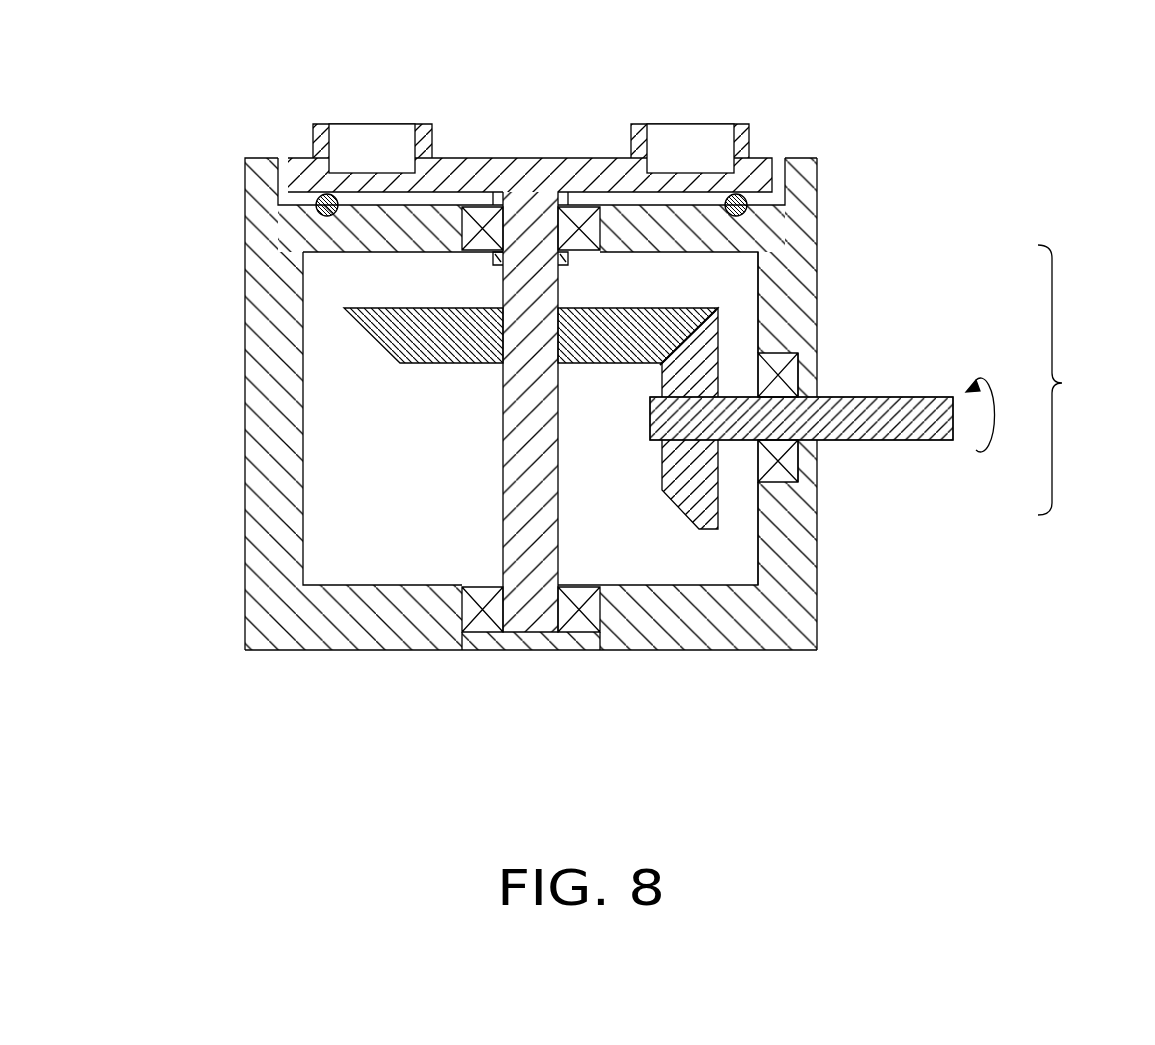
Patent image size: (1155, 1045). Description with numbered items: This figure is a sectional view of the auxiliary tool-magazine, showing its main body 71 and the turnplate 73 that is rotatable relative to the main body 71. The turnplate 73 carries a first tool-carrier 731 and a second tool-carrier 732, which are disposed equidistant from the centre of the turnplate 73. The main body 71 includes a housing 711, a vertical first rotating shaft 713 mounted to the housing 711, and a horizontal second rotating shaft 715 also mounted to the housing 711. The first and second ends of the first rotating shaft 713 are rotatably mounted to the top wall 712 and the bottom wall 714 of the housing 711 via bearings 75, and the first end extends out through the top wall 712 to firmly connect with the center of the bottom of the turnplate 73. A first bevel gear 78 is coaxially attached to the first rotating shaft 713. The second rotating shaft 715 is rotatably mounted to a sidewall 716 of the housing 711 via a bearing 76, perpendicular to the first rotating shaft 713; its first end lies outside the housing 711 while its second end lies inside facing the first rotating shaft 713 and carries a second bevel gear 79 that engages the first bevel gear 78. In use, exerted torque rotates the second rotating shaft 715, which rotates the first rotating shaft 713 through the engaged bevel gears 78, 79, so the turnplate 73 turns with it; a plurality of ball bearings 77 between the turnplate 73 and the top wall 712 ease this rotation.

The main body 71 is at (1075, 380).
The turnplate 73 is at (482, 178).
The bearings 75 is at (588, 228).
The bearing 76 is at (785, 458).
The ball bearings 77 is at (322, 212).
The first bevel gear 78 is at (432, 350).
The second bevel gear 79 is at (805, 318).
The housing 711 is at (707, 340).
The top wall 712 is at (675, 222).
The first rotating shaft 713 is at (535, 495).
The bottom wall 714 is at (668, 633).
The second rotating shaft 715 is at (898, 410).
The sidewall 716 is at (805, 562).
The first tool-carrier 731 is at (385, 155).
The second tool-carrier 732 is at (678, 153).